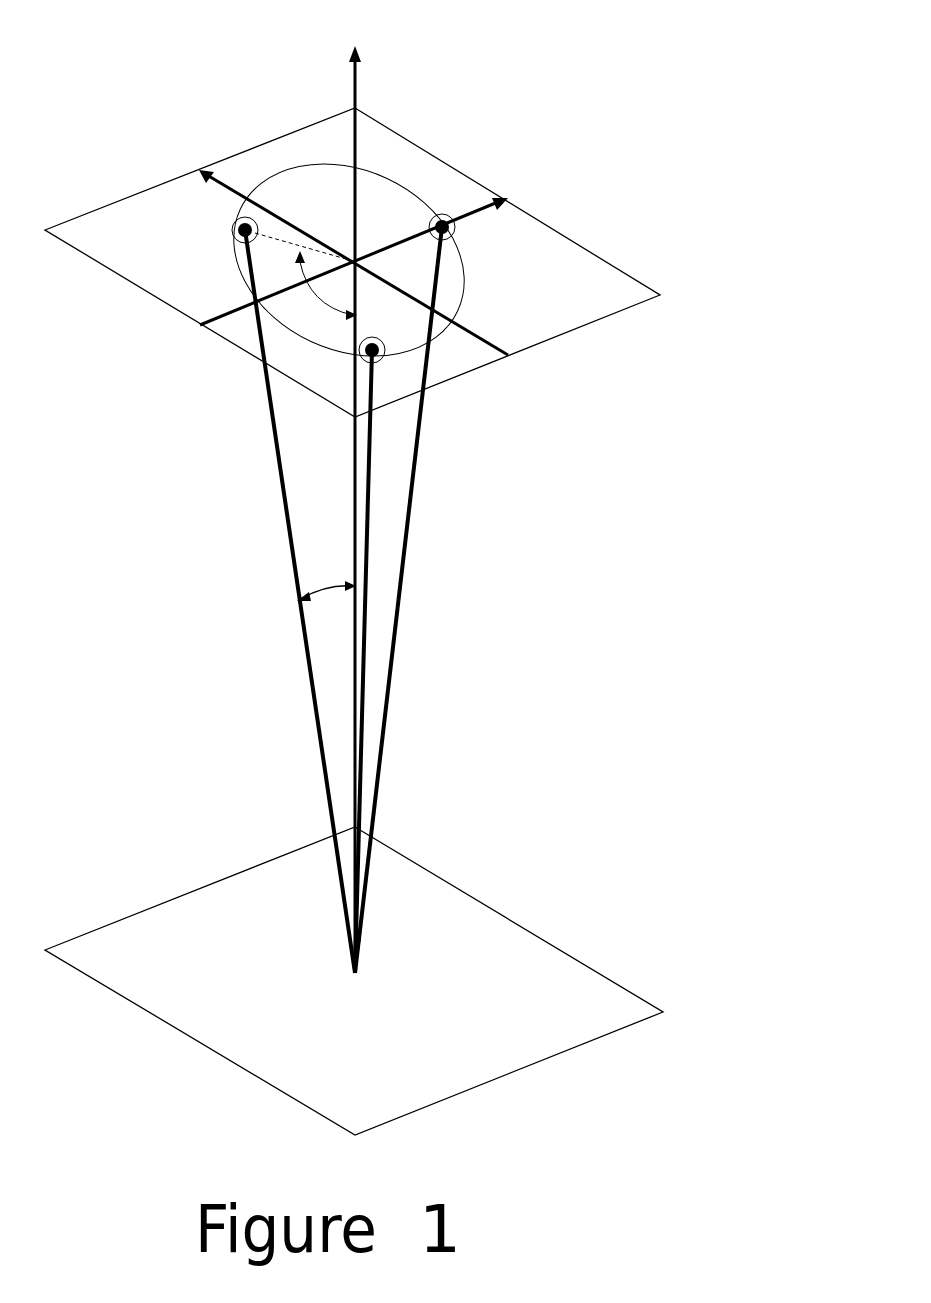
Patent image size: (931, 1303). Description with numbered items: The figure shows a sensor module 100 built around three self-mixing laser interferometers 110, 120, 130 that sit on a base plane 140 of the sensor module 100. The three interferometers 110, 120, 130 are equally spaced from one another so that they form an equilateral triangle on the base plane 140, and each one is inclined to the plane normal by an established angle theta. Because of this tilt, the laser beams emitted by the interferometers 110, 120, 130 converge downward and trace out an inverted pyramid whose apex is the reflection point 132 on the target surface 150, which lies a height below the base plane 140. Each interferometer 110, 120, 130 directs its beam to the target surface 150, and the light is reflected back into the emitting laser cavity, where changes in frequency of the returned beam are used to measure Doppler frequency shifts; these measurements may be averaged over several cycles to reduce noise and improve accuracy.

The sensor module 100 is at (385, 147).
The self-mixing laser interferometer 110 is at (465, 233).
The self-mixing laser interferometer 120 is at (232, 219).
The self-mixing laser interferometer 130 is at (360, 357).
The reflection point 132 is at (358, 988).
The base plane 140 is at (137, 285).
The target surface 150 is at (563, 970).